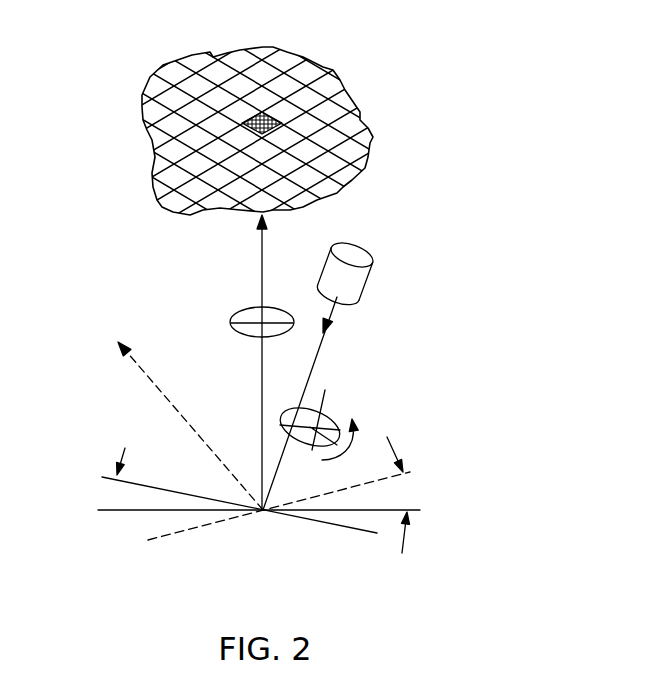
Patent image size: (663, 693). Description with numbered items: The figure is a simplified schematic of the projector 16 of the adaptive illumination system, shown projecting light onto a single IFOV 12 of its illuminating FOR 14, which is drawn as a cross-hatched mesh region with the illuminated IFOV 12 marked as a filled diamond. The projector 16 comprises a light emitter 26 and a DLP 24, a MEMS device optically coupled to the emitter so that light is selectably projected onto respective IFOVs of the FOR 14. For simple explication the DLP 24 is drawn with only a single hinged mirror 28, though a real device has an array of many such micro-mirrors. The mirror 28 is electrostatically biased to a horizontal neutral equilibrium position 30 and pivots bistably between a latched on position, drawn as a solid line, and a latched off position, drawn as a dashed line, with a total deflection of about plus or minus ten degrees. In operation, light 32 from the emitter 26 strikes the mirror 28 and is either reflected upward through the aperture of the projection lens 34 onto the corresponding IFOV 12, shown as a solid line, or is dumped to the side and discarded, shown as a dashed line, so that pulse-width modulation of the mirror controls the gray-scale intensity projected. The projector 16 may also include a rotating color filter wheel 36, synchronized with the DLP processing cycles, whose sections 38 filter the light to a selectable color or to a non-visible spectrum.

The IFOV 12 is at (277, 111).
The FOR 14 is at (374, 128).
The projector 16 is at (416, 258).
The DLP 24 is at (309, 488).
The light emitter 26 is at (362, 248).
The hinged mirror 28 is at (218, 497).
The neutral equilibrium position 30 is at (113, 524).
The light 32 is at (262, 258).
The projection lens 34 is at (238, 312).
The color filter wheel 36 is at (328, 410).
The sections 38 is at (312, 450).